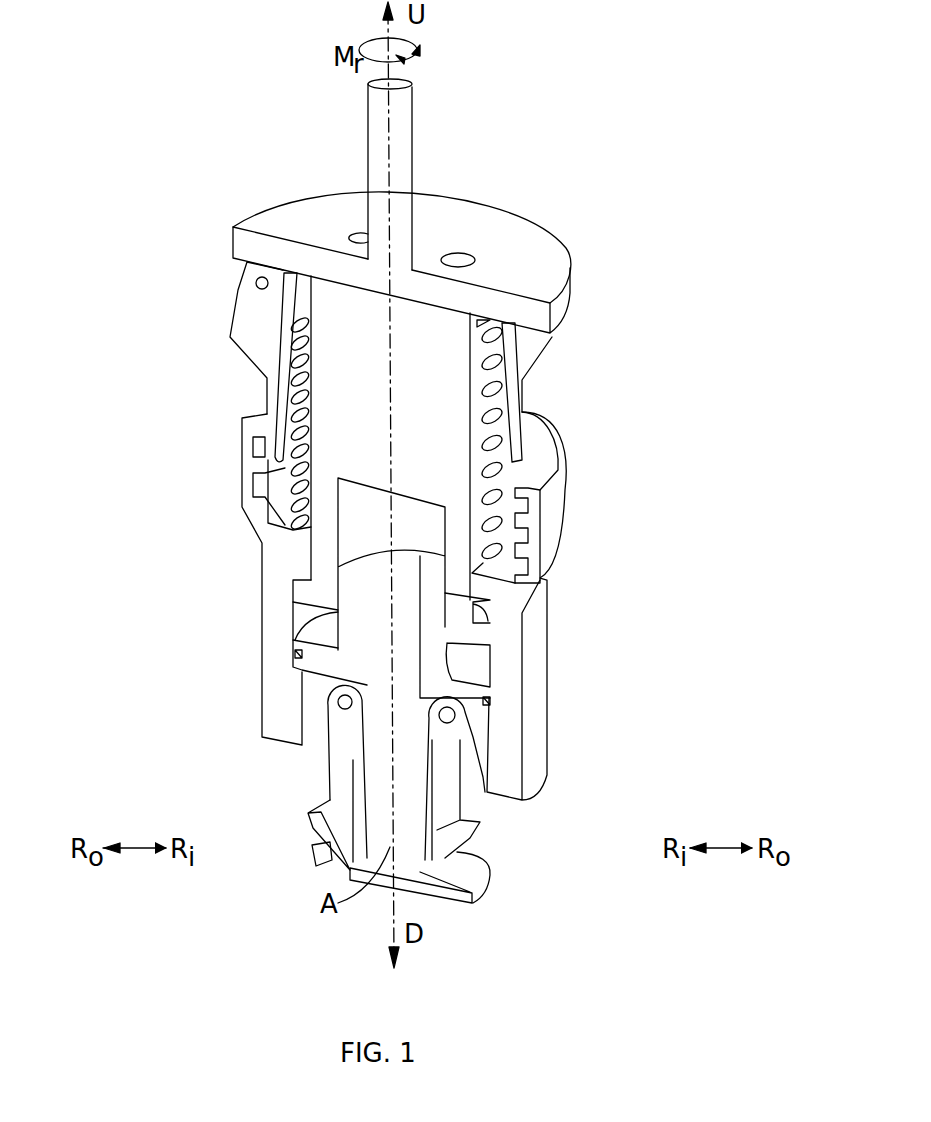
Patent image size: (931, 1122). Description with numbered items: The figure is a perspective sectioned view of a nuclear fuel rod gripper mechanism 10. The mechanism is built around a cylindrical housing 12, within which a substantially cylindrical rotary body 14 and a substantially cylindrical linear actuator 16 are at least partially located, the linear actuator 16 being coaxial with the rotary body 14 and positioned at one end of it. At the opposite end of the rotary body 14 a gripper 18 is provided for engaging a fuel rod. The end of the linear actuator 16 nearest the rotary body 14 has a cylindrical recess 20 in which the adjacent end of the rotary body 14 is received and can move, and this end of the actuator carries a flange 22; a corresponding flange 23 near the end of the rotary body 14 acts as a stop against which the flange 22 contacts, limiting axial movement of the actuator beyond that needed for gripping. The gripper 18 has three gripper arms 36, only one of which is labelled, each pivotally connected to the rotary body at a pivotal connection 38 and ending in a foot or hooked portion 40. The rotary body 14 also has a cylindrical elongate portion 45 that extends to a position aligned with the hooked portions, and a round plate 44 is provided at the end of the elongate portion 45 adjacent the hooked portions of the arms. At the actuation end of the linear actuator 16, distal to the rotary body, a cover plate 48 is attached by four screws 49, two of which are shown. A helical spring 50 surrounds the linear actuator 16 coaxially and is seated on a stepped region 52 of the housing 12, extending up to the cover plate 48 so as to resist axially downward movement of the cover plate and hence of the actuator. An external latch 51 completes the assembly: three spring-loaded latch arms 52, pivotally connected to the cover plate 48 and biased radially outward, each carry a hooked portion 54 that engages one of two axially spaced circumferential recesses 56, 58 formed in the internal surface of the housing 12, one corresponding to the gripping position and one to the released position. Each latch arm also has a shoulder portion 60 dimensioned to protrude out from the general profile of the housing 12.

The nuclear fuel rod gripper mechanism 10 is at (731, 177).
The housing 12 is at (557, 502).
The rotary body 14 is at (384, 632).
The linear actuator 16 is at (444, 426).
The gripper 18 is at (533, 841).
The cylindrical recess 20 is at (362, 523).
The flange 22 is at (481, 637).
The flange 23 is at (479, 668).
The gripper arms 36 is at (340, 765).
The pivotal connection 38 is at (332, 703).
The hooked portion 40 is at (316, 831).
The plate 44 is at (487, 890).
The elongate portion 45 is at (541, 790).
The cover plate 48 is at (461, 215).
The screws 49 is at (362, 238).
The helical spring 50 is at (498, 430).
The external latch 51 is at (182, 230).
The stepped region / latch arms 52 is at (276, 400).
The hooked portion 54 is at (258, 448).
The circumferential recess 56 is at (253, 488).
The circumferential recess 58 is at (245, 438).
The shoulder portion 60 is at (232, 330).